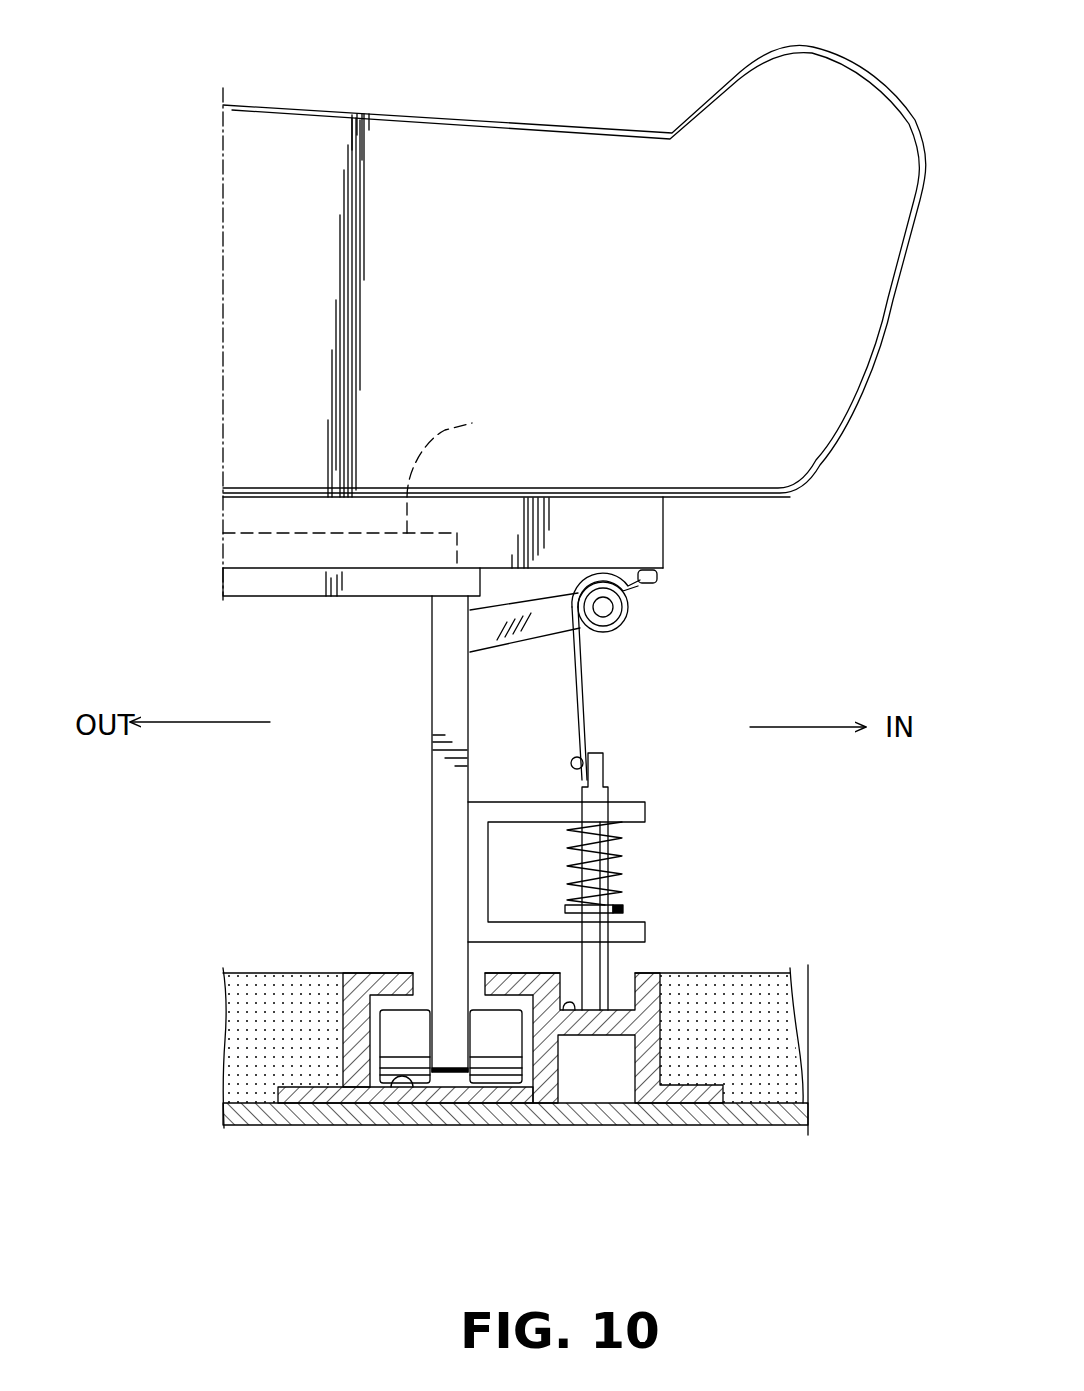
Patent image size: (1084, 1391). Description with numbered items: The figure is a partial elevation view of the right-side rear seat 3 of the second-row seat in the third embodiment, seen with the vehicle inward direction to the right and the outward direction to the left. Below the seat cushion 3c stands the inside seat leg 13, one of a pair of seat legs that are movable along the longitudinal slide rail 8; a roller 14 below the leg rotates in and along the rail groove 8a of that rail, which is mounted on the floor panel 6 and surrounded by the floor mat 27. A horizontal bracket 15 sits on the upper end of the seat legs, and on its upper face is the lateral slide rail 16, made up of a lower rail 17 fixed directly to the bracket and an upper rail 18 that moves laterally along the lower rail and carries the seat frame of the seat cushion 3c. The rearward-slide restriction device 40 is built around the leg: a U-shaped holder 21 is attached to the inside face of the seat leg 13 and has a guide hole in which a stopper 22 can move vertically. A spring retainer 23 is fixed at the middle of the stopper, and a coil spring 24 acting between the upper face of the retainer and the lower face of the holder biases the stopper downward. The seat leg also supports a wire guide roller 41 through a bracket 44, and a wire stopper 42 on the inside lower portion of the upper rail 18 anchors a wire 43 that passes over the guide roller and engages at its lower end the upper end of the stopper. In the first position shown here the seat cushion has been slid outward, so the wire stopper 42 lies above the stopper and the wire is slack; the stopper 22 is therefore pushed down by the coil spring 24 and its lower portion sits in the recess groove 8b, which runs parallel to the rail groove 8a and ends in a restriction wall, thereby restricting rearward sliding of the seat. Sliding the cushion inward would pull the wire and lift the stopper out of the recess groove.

The right-side rear seat 3 is at (586, 108).
The seat cushion 3c is at (490, 294).
The floor panel 6 is at (262, 1126).
The longitudinal slide rail 8 is at (500, 1037).
The rail groove 8a is at (392, 1104).
The recess groove 8b is at (570, 1010).
The seat leg 13 is at (432, 690).
The roller 14 is at (477, 1088).
The bracket 15 is at (268, 598).
The lateral slide rail 16 is at (443, 444).
The lower rail 17 is at (358, 479).
The upper rail 18 is at (596, 524).
The holder 21 is at (472, 836).
The stopper 22 is at (612, 974).
The spring retainer 23 is at (623, 909).
The coil spring 24 is at (622, 852).
The floor mat 27 is at (776, 1030).
The rearward-slide restriction device 40 is at (608, 666).
The wire guide roller 41 is at (617, 630).
The wire stopper 42 is at (658, 580).
The wire 43 is at (576, 703).
The bracket 44 is at (488, 630).